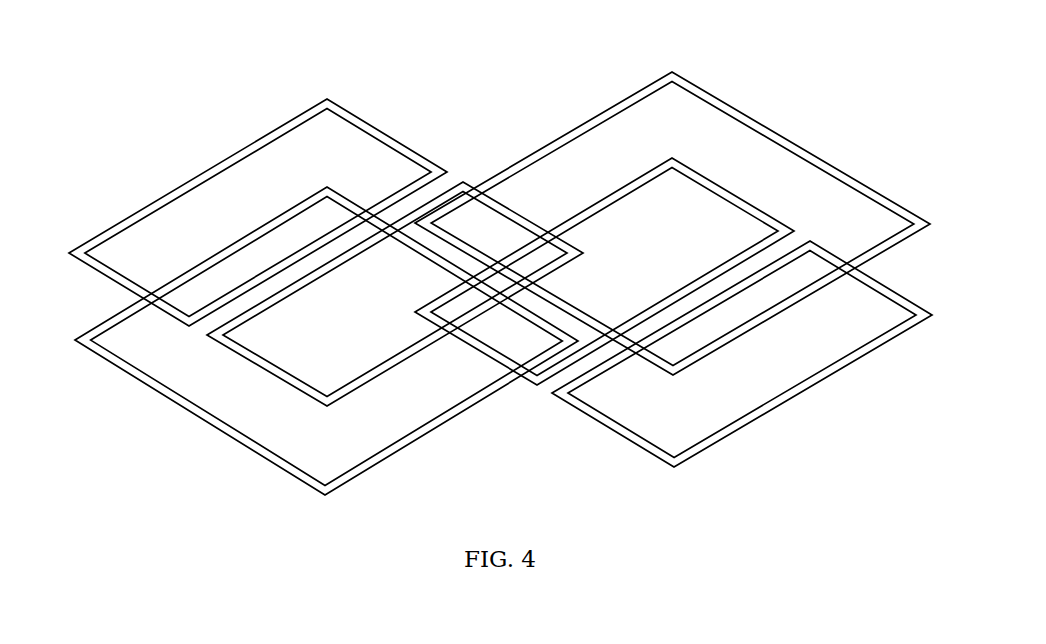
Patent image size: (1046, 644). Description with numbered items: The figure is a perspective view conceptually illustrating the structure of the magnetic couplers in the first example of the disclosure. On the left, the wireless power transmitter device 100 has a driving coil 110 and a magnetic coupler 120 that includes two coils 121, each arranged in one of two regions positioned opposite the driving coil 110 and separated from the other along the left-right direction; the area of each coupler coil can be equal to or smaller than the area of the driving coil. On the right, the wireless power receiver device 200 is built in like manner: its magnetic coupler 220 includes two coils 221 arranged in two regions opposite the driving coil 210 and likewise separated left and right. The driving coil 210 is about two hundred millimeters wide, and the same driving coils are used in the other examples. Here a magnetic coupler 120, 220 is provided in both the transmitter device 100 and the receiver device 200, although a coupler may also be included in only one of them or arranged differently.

The wireless power transmitter device 100 is at (393, 55).
The driving coil 110 is at (208, 424).
The magnetic coupler 120 is at (468, 156).
The coils 121 is at (392, 136).
The wireless power receiver device 200 is at (843, 78).
The driving coil 210 is at (737, 108).
The magnetic coupler 220 is at (555, 412).
The coils 221 is at (480, 352).